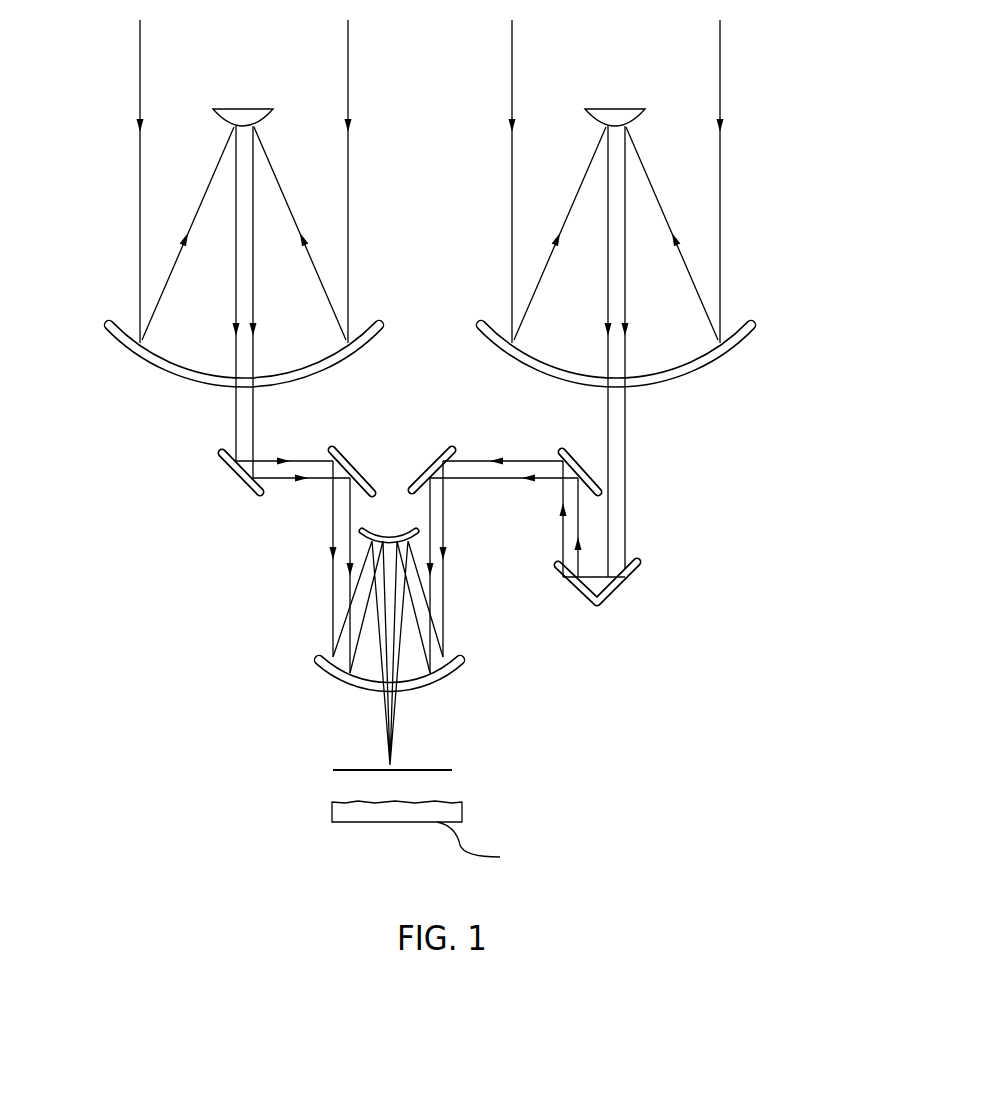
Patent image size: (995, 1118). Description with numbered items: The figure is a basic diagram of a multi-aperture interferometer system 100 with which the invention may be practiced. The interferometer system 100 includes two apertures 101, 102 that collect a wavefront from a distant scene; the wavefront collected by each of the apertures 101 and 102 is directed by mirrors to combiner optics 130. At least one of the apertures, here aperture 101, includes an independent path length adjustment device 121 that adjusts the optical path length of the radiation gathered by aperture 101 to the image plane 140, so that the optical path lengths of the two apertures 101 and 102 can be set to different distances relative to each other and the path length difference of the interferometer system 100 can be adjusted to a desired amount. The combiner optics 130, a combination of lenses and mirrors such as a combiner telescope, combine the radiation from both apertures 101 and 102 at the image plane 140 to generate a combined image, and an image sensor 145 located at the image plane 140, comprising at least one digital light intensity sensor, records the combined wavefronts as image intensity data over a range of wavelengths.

The interferometer system 100 is at (830, 114).
The aperture 101 is at (733, 342).
The aperture 102 is at (125, 347).
The independent path length adjustment device 121 is at (650, 582).
The combiner optics 130 is at (298, 527).
The image plane 140 is at (475, 768).
The image sensor 145 is at (483, 812).